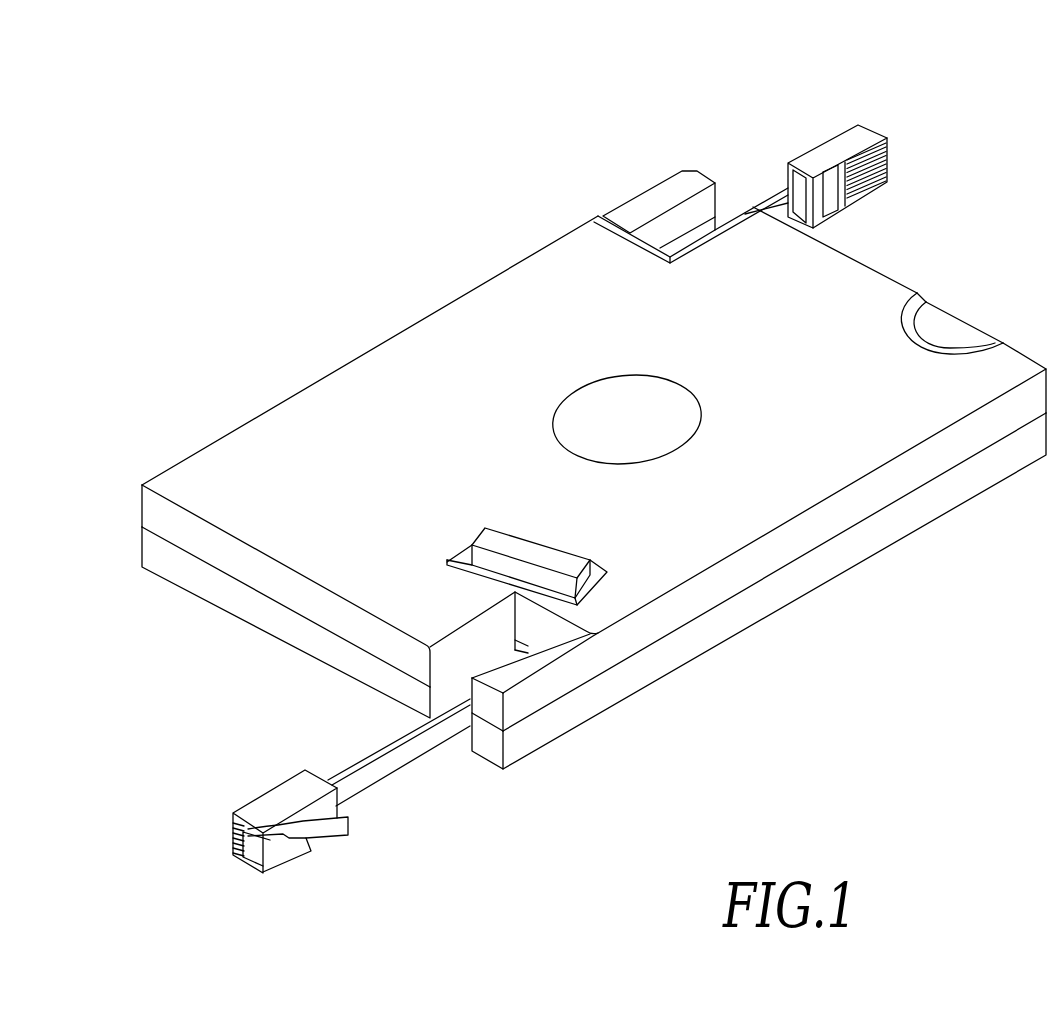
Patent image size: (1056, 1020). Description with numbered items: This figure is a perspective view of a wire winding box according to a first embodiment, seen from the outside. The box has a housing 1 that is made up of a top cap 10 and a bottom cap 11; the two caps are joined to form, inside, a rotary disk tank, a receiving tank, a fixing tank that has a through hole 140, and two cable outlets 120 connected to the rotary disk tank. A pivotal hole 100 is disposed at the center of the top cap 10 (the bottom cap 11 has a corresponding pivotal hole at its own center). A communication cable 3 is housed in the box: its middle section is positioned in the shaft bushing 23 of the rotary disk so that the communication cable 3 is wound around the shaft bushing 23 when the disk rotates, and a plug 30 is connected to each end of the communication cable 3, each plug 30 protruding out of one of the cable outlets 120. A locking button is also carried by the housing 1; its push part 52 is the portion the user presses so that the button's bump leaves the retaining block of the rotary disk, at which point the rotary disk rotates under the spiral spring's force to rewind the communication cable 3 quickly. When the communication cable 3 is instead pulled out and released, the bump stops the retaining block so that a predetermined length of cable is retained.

The housing 1 is at (594, 470).
The top cap 10 is at (778, 562).
The bottom cap 11 is at (753, 610).
The pivotal hole 100 is at (702, 418).
The shaft bushing 23 is at (610, 403).
The push part 52 is at (512, 545).
The through hole 140 is at (598, 571).
The cable outlet 120 is at (726, 208).
The communication cable 3 is at (355, 780).
The plug 30 is at (858, 137).